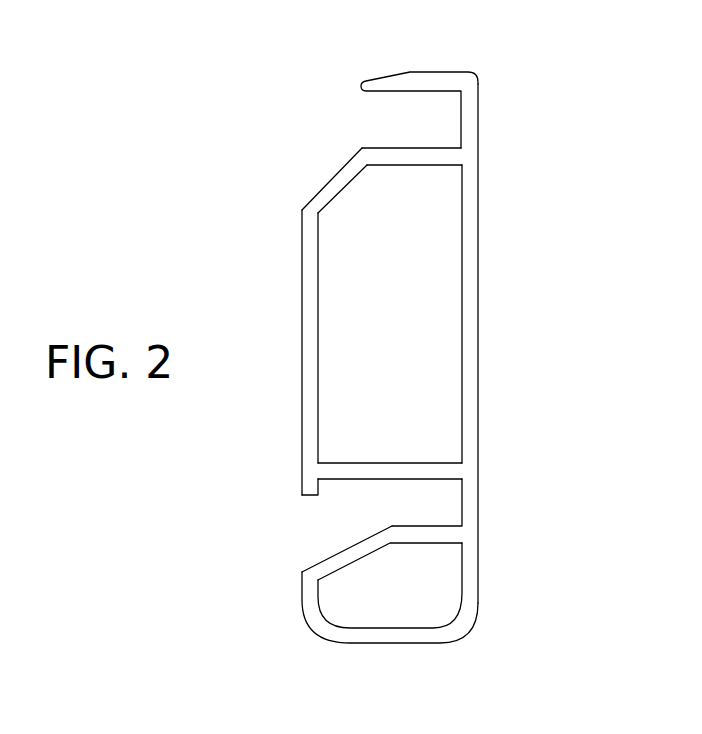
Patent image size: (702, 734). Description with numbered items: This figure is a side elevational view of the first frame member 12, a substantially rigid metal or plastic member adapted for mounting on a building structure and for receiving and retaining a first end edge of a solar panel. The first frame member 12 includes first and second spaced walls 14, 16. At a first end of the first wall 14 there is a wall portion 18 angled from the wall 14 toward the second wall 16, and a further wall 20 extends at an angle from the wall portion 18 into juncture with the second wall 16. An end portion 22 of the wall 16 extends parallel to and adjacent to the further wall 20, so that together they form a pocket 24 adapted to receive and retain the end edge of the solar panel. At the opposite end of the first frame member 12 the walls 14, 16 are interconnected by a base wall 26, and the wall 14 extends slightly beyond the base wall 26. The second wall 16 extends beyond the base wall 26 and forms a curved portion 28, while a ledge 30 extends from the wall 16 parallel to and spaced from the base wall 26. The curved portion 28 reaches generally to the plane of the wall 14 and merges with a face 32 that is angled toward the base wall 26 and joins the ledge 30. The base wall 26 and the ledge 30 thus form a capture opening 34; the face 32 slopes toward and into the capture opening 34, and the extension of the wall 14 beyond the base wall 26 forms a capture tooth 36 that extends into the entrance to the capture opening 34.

The first frame member 12 is at (498, 267).
The first wall 14 is at (302, 282).
The second wall 16 is at (478, 318).
The wall portion 18 is at (330, 180).
The further wall 20 is at (408, 165).
The end portion 22 is at (430, 72).
The pocket 24 is at (358, 107).
The base wall 26 is at (387, 463).
The curved portion 28 is at (348, 645).
The ledge 30 is at (427, 526).
The face 32 is at (345, 549).
The capture opening 34 is at (340, 516).
The capture tooth 36 is at (300, 488).